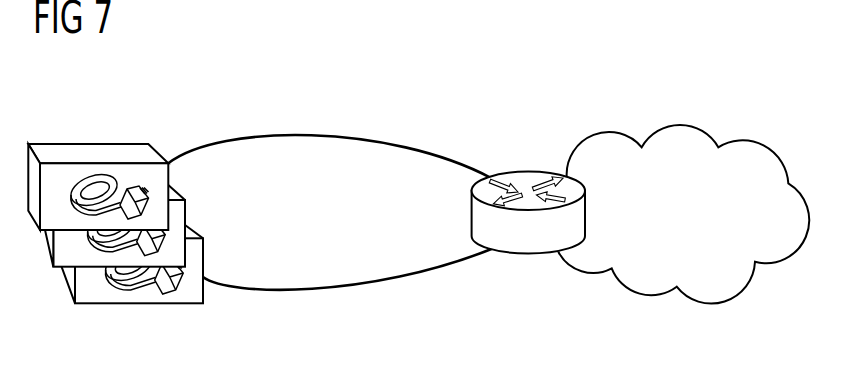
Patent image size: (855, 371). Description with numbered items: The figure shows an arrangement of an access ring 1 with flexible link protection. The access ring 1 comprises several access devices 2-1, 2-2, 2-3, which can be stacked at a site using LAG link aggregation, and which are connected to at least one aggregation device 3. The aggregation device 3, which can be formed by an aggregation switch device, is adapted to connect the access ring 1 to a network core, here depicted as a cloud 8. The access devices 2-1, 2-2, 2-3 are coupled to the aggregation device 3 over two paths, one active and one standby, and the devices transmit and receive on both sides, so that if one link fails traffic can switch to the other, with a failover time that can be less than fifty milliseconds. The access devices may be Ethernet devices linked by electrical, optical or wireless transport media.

The access ring 1 is at (346, 89).
The access device 2-1 is at (87, 152).
The access device 2-2 is at (61, 263).
The access device 2-3 is at (138, 301).
The aggregation device 3 is at (528, 172).
The network 8 is at (680, 121).